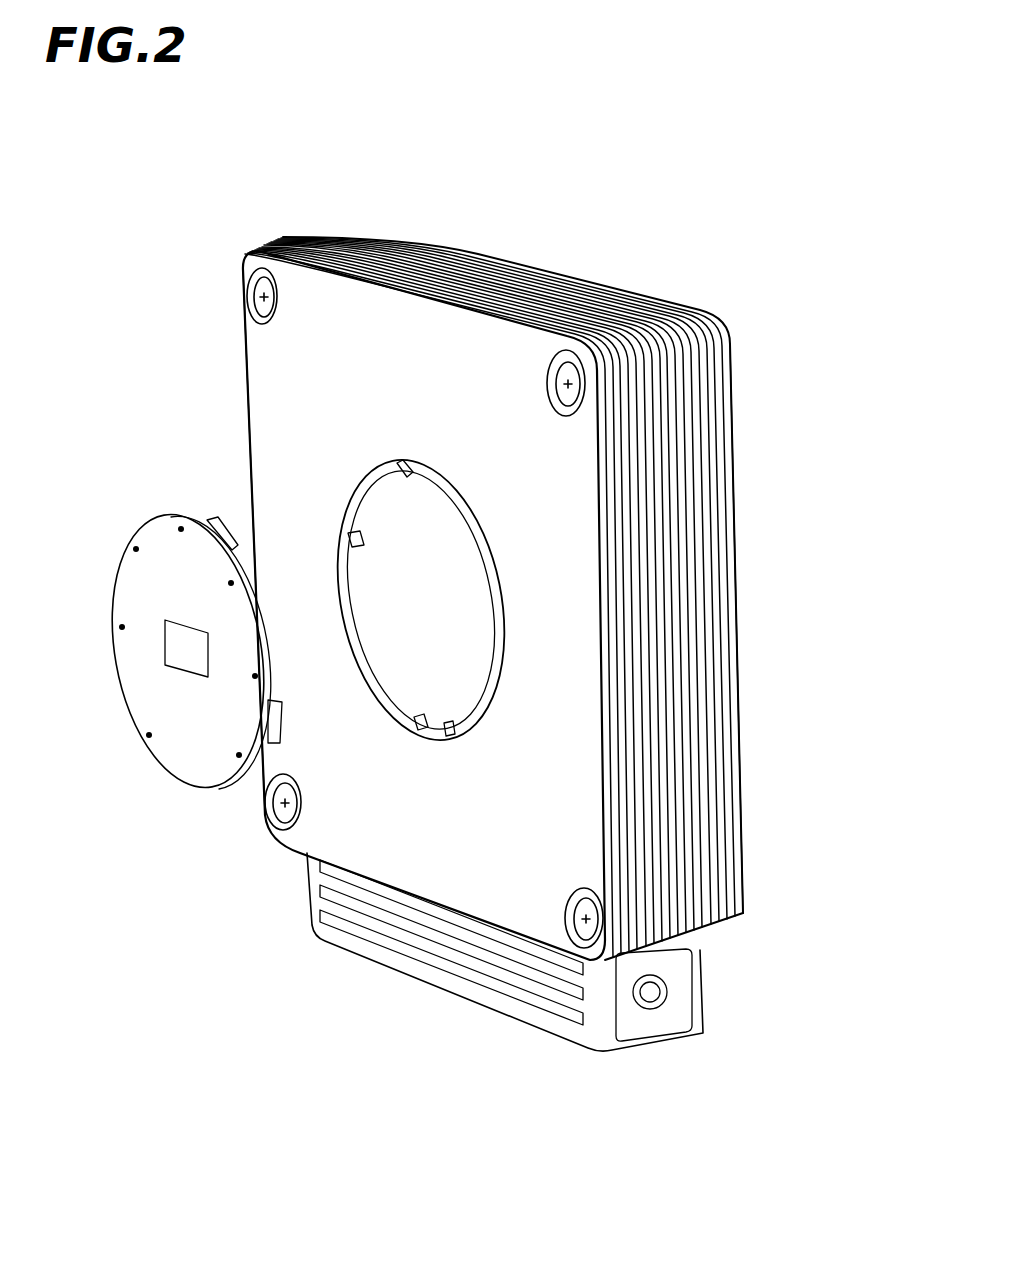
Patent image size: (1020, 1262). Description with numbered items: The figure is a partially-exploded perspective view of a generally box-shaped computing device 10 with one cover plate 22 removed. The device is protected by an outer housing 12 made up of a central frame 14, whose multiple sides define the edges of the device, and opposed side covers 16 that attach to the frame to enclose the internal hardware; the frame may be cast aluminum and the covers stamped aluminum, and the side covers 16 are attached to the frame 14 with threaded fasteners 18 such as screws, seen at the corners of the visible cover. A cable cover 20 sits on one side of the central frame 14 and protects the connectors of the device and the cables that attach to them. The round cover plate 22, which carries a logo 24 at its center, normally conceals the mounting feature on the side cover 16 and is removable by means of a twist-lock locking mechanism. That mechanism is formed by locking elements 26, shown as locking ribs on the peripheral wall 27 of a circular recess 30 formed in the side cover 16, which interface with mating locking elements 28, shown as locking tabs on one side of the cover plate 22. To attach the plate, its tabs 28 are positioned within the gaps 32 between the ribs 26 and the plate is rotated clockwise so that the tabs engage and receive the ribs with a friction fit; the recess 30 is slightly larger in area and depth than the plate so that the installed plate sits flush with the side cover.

The computing device 10 is at (828, 157).
The outer housing 12 is at (763, 288).
The central frame 14 is at (590, 292).
The side covers 16 is at (262, 420).
The threaded fasteners 18 is at (286, 348).
The cable cover 20 is at (583, 1042).
The cover plate 22 is at (162, 747).
The logo 24 is at (205, 634).
The locking elements 26 is at (387, 513).
The peripheral wall 27 is at (356, 590).
The locking elements 28 is at (227, 503).
The circular recess 30 is at (421, 436).
The gaps 32 is at (434, 462).